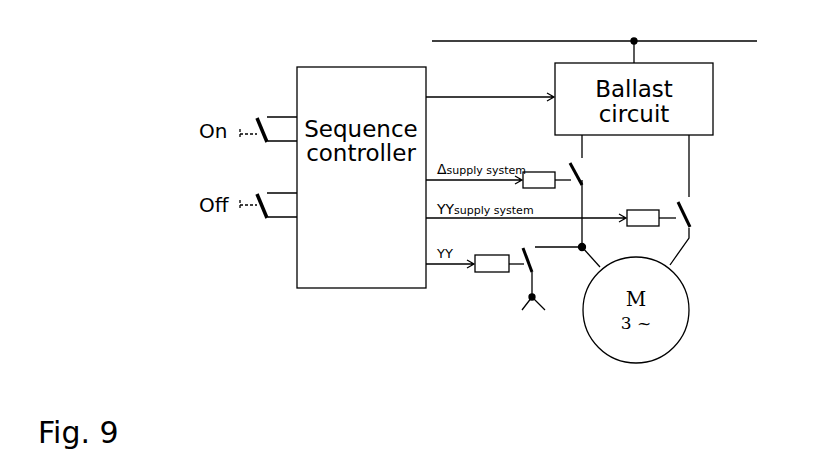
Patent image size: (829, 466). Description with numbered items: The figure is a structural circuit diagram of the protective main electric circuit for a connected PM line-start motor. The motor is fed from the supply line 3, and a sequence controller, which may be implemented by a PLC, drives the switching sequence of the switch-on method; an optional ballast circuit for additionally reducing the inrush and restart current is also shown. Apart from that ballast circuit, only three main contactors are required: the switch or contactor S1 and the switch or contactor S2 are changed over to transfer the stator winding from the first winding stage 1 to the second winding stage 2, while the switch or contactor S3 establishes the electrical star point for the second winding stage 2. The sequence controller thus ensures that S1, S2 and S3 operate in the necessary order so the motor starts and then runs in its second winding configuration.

The power supply network 3 is at (663, 49).
The switch or contactor S1 is at (552, 171).
The switch or contactor S2 is at (658, 210).
The switch or contactor S3 is at (510, 274).
The motor winding terminals U1V1W1 1 is at (608, 254).
The motor winding terminals U2V2W2 2 is at (700, 246).